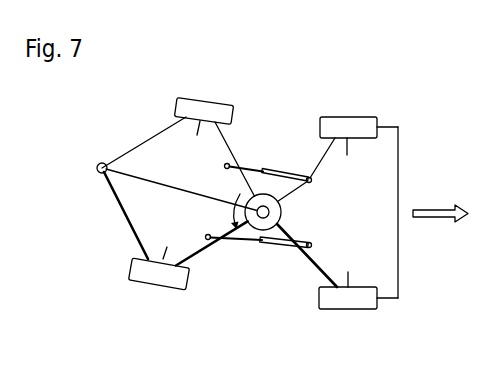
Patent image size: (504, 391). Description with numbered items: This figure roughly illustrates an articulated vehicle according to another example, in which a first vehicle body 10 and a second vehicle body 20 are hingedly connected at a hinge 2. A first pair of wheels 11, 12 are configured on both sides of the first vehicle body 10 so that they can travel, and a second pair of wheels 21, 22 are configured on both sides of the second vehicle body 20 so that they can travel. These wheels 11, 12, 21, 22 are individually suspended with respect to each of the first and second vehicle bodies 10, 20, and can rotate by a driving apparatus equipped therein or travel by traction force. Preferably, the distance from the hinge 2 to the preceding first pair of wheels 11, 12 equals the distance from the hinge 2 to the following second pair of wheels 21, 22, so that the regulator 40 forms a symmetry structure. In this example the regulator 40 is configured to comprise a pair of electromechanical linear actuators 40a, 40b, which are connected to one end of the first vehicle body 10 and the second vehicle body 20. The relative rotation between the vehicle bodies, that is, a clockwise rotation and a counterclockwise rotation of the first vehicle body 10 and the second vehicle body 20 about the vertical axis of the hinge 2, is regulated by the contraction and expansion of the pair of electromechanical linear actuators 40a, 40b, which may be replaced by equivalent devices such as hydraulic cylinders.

The hinge 2 is at (263, 224).
The first vehicle body 10 is at (383, 172).
The first pair of wheels 11 is at (363, 122).
The first pair of wheels 12 is at (362, 300).
The second vehicle body 20 is at (125, 168).
The second pair of wheels 21 is at (187, 100).
The second pair of wheels 22 is at (143, 268).
The regulator 40 is at (251, 194).
The electromechanical linear actuator 40a is at (276, 247).
The electromechanical linear actuator 40b is at (284, 168).